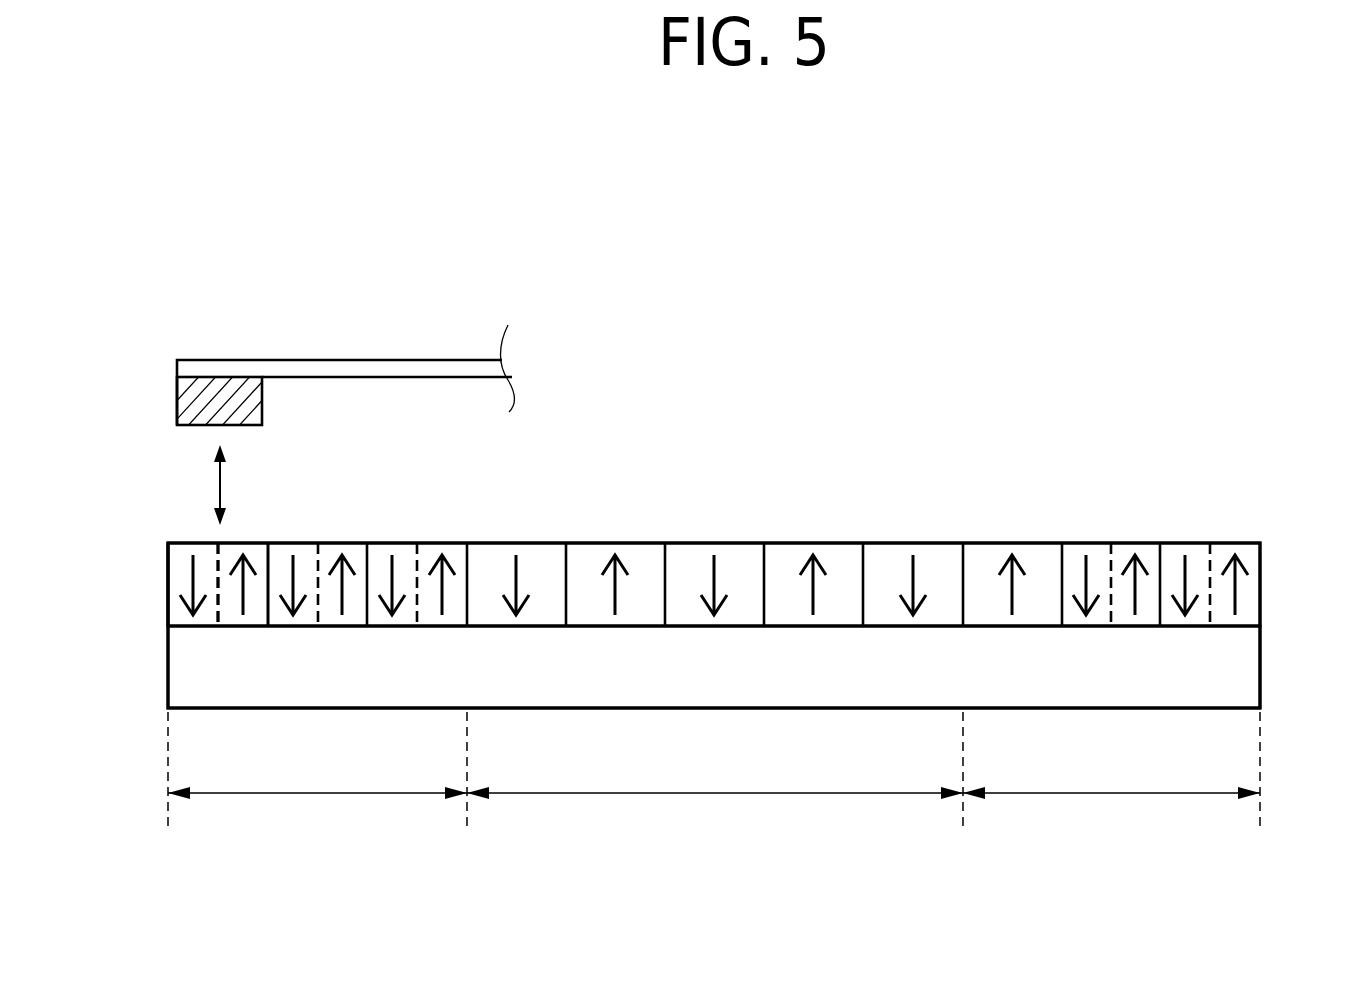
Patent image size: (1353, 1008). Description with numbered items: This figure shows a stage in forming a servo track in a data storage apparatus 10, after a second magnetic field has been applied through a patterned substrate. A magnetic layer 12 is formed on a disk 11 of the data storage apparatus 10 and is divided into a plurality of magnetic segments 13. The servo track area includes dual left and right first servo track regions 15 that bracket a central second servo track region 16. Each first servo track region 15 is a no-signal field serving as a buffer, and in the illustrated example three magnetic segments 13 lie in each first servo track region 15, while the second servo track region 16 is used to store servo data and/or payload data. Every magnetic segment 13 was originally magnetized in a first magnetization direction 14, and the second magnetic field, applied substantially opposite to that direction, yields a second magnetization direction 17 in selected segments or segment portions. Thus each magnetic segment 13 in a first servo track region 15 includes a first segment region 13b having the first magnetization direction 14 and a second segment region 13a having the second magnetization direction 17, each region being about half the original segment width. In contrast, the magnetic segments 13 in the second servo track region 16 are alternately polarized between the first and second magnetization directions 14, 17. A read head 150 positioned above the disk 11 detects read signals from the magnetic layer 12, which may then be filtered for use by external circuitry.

The data storage apparatus 10 is at (705, 572).
The disk 11 is at (178, 668).
The magnetic layer 12 is at (1262, 585).
The magnetic segments 13 is at (532, 550).
The second segment region 13a is at (178, 561).
The first segment region 13b is at (232, 546).
The first magnetization direction 14 is at (620, 593).
The first servo track region 15 is at (423, 796).
The second servo track region 16 is at (573, 796).
The second magnetization direction 17 is at (187, 583).
The read head 150 is at (342, 336).